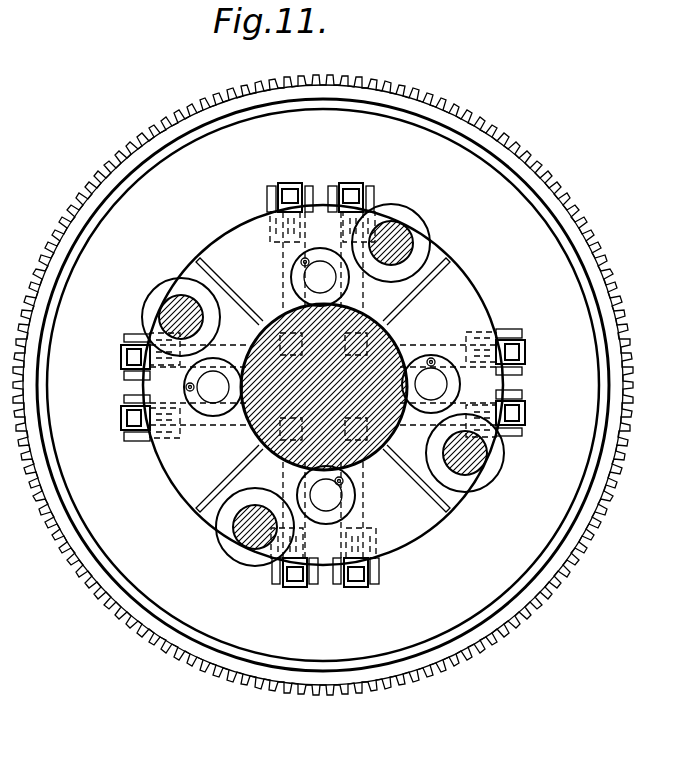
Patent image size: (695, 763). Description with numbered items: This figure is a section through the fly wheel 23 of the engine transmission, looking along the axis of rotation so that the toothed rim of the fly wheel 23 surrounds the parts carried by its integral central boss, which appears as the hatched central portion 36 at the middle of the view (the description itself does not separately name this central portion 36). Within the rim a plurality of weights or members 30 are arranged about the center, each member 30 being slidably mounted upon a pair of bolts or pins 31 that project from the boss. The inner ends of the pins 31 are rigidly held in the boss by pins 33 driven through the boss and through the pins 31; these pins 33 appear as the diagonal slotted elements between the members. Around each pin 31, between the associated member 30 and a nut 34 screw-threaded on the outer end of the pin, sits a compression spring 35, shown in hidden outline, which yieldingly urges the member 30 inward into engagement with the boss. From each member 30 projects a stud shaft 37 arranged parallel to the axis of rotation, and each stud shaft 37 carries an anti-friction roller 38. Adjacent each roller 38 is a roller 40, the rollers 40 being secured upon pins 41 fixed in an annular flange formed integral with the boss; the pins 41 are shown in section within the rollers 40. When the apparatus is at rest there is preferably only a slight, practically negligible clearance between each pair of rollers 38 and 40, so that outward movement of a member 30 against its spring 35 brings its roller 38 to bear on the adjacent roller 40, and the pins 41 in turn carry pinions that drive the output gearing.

The fly wheel 23 is at (250, 696).
The member 30 is at (452, 263).
The pin 31 is at (356, 183).
The pin 33 is at (386, 312).
The nut 34 is at (345, 192).
The compression spring 35 is at (270, 224).
The central hub 36 is at (324, 387).
The stud shaft 37 is at (312, 280).
The roller 38 is at (301, 262).
The roller 40 is at (175, 290).
The pin 41 is at (168, 312).